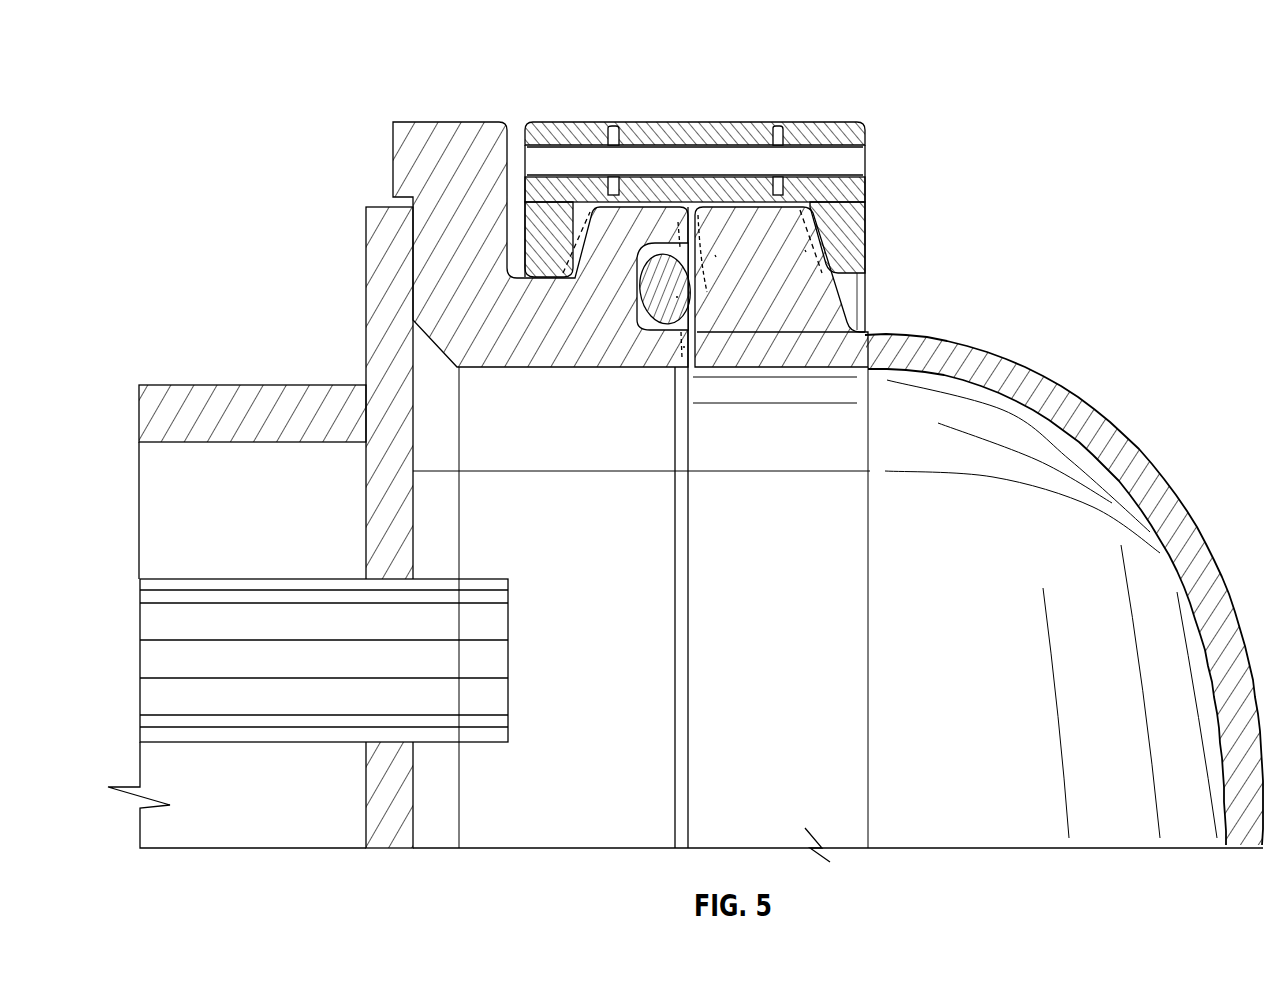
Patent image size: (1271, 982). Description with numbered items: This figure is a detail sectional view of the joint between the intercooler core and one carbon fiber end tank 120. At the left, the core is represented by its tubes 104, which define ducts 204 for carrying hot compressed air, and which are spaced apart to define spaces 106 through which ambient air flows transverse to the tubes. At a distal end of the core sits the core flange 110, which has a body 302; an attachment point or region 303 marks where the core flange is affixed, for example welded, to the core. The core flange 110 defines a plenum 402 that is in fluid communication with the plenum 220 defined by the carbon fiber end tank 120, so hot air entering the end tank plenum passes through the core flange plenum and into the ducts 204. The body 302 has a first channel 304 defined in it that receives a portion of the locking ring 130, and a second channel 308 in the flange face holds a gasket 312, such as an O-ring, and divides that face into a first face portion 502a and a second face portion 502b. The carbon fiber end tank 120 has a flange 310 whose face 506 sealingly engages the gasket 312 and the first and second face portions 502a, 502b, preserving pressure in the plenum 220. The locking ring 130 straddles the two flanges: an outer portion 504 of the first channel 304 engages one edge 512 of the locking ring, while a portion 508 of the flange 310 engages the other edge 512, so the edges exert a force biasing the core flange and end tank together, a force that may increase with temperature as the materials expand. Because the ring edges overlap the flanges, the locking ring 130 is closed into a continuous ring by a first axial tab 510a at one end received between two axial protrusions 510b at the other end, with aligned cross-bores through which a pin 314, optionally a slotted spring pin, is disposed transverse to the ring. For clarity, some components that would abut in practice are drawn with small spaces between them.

The tubes 104 is at (192, 748).
The spaces 106 is at (262, 518).
The core flange 110 is at (438, 116).
The carbon fiber end tank 120 is at (1122, 416).
The locking ring 130 is at (629, 170).
The ducts 204 is at (317, 673).
The plenum 220 is at (799, 678).
The body 302 is at (550, 343).
The attachment point or region 303 is at (410, 262).
The first channel 304 is at (514, 135).
The second channel 308 is at (648, 250).
The flange 310 is at (777, 275).
The gasket 312 is at (678, 297).
The pin 314 is at (850, 157).
The plenum 402 is at (611, 668).
The first face portion 502a is at (703, 225).
The second face portion 502b is at (683, 347).
The portion of the first channel 504 is at (566, 245).
The face 506 is at (715, 255).
The portion of the flange 508 is at (805, 250).
The first axial tab 510a is at (668, 128).
The axial protrusions 510b is at (588, 127).
The edge 512 is at (547, 267).